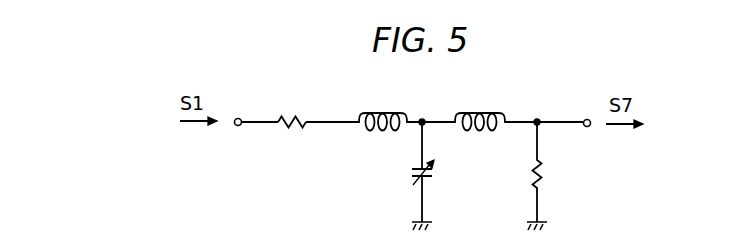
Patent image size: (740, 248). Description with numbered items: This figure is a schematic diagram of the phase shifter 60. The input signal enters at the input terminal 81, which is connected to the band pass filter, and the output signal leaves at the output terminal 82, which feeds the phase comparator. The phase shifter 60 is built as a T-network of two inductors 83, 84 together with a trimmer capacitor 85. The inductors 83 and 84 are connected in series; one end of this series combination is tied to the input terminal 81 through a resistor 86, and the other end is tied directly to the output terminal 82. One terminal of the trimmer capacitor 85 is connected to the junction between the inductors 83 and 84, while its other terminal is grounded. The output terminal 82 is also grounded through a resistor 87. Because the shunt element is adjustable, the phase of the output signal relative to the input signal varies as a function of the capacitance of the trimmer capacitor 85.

The phase shifter 60 is at (302, 183).
The input terminal 81 is at (239, 118).
The output terminal 82 is at (586, 119).
The inductor 83 is at (388, 113).
The inductor 84 is at (494, 113).
The trimmer capacitor 85 is at (410, 177).
The resistor 86 is at (301, 118).
The resistor 87 is at (533, 180).